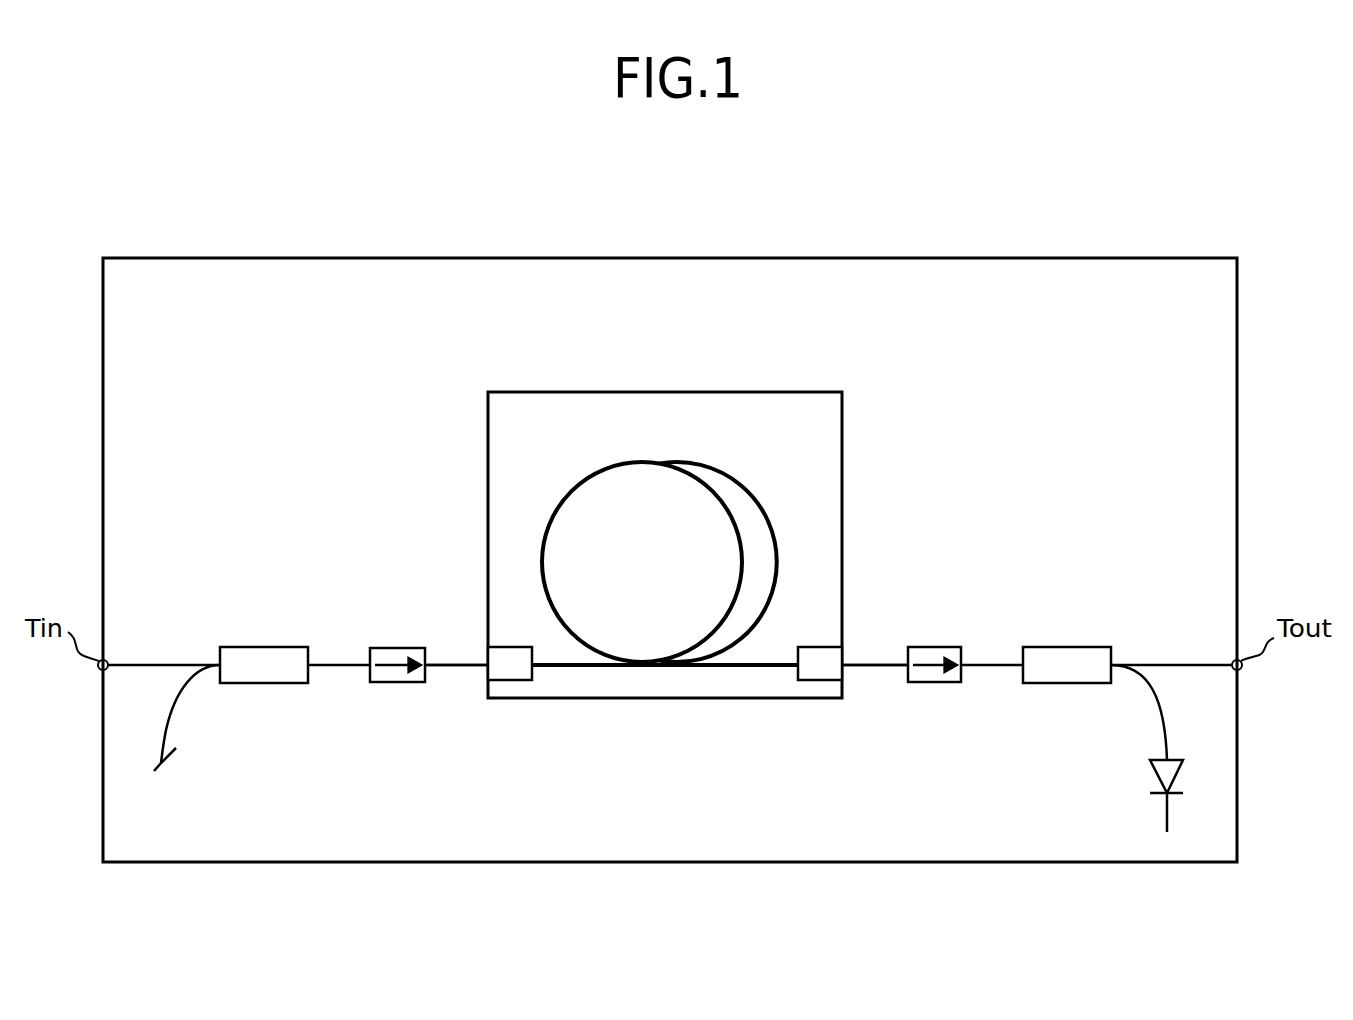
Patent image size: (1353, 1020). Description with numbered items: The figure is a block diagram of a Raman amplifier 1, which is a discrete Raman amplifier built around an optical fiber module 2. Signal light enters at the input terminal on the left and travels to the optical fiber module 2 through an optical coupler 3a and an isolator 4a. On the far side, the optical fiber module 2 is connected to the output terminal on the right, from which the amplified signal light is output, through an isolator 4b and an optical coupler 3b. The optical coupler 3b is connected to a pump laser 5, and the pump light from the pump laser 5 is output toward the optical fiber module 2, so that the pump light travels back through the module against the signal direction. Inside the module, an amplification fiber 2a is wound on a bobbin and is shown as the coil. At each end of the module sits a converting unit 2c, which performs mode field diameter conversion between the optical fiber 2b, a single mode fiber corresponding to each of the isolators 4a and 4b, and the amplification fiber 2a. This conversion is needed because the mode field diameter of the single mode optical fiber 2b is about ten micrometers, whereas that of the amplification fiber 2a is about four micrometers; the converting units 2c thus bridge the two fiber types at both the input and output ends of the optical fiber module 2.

The Raman amplifier 1 is at (813, 258).
The optical fiber module 2 is at (760, 392).
The amplification fiber 2a is at (652, 458).
The optical fiber 2b is at (866, 630).
The converting unit 2c is at (512, 680).
The optical coupler 3a is at (262, 647).
The optical coupler 3b is at (1062, 647).
The isolator 4a is at (395, 682).
The isolator 4b is at (935, 682).
The pump laser 5 is at (1150, 778).